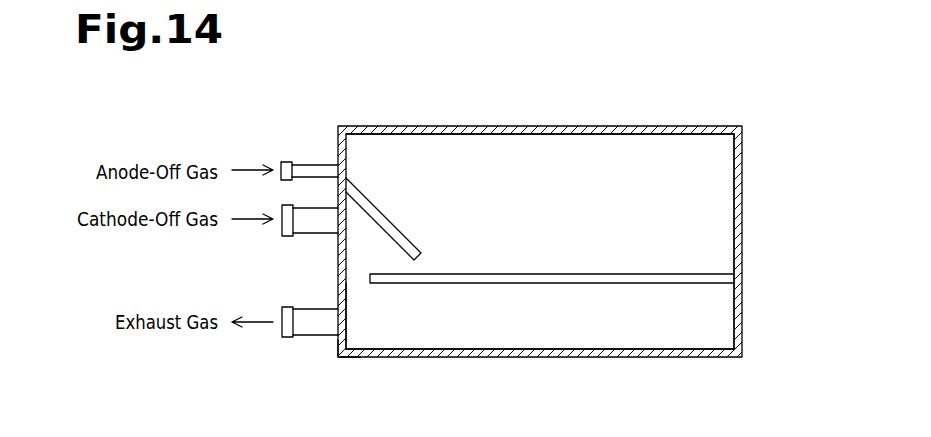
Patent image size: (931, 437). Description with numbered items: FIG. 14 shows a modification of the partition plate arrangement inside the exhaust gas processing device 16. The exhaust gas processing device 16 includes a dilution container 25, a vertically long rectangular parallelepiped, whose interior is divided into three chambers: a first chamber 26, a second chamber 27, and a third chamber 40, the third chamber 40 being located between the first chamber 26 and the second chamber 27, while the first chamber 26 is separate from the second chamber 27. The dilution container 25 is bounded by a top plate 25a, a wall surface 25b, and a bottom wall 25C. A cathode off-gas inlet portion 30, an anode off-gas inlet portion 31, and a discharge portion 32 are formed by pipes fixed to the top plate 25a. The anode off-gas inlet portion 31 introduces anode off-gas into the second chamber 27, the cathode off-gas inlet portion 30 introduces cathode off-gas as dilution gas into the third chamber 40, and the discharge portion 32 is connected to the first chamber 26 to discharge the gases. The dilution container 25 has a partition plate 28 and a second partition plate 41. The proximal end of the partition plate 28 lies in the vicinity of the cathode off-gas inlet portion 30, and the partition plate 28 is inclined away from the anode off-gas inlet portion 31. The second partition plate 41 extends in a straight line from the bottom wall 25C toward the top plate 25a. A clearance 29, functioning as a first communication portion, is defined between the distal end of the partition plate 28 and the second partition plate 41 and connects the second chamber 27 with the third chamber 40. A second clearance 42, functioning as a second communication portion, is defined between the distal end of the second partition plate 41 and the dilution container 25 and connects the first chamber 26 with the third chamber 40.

The exhaust gas processing device 16 is at (758, 131).
The dilution container 25 is at (701, 124).
The top plate 25a is at (338, 350).
The wall surface 25b is at (645, 346).
The bottom wall 25C is at (735, 205).
The first chamber 26 is at (416, 343).
The second chamber 27 is at (601, 142).
The partition plate 28 is at (397, 229).
The clearance 29 is at (428, 266).
The cathode off-gas inlet portion 30 is at (312, 242).
The anode off-gas inlet portion 31 is at (307, 170).
The discharge portion 32 is at (312, 343).
The third chamber 40 is at (353, 260).
The second partition plate 41 is at (592, 273).
The second clearance 42 is at (358, 283).